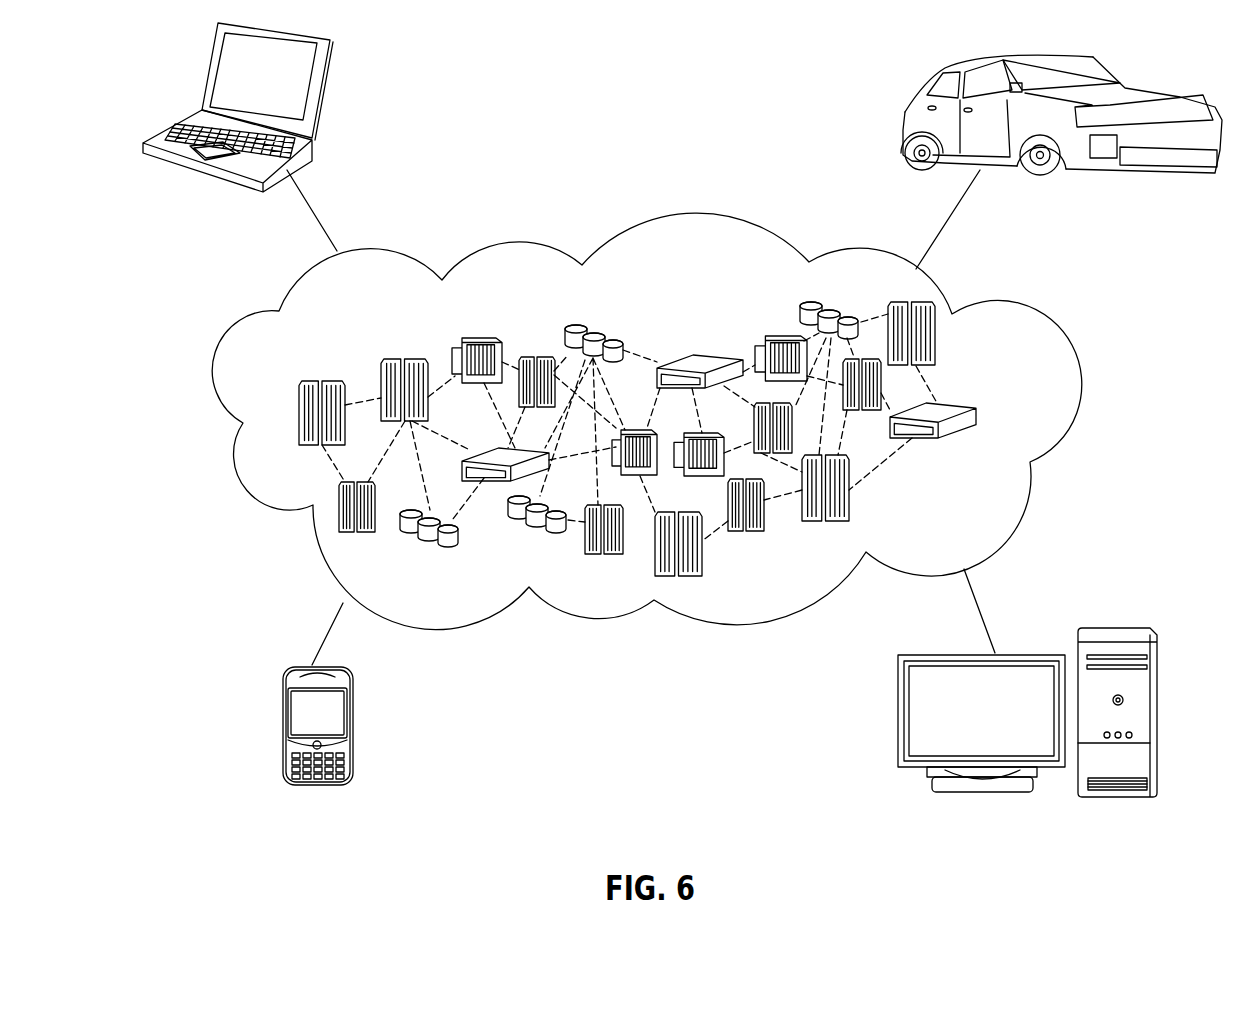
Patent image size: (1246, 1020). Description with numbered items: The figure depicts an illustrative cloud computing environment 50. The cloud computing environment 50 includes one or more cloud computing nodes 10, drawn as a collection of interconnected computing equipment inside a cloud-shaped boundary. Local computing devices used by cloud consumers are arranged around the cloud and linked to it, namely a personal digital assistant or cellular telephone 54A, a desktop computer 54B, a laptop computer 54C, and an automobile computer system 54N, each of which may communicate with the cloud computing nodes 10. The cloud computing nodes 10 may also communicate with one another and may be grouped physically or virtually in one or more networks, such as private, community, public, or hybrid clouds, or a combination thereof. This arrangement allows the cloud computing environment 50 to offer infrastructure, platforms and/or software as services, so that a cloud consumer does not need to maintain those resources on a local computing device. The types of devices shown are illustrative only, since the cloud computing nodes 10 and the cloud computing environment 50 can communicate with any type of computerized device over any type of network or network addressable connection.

The cloud computing environment 50 is at (1038, 330).
The cloud computing nodes 10 is at (1013, 413).
The personal digital assistant or cellular telephone 54A is at (283, 728).
The desktop computer 54B is at (1122, 628).
The laptop computer 54C is at (323, 92).
The automobile computer system 54N is at (910, 102).